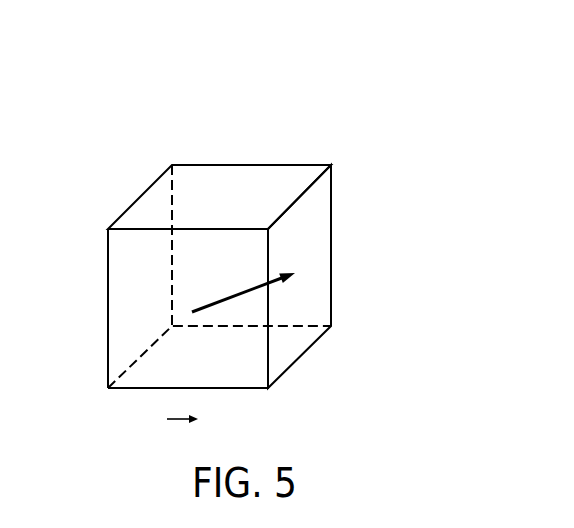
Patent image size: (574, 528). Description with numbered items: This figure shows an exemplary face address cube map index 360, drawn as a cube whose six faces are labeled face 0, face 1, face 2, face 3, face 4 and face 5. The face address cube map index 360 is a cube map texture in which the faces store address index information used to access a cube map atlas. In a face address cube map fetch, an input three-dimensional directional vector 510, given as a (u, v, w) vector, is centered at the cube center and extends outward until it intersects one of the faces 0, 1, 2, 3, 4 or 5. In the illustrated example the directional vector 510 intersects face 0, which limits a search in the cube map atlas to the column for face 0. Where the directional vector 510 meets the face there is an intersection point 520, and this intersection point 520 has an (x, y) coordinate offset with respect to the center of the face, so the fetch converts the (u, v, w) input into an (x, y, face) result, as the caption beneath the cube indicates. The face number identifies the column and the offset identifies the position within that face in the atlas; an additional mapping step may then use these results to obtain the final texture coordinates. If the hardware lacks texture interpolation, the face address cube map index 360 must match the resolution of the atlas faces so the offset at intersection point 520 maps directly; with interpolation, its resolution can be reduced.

The face address cube map index 360 is at (389, 126).
The face 0 is at (318, 213).
The face 1 is at (270, 165).
The face 2 is at (128, 288).
The face 3 is at (245, 373).
The face 4 is at (236, 211).
The face 5 is at (214, 368).
The directional vector 510 is at (242, 288).
The intersection point 520 is at (290, 281).